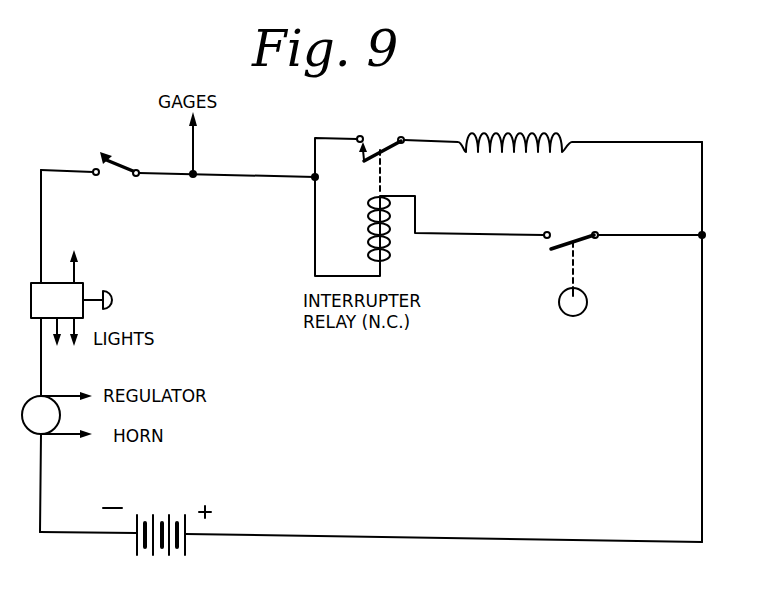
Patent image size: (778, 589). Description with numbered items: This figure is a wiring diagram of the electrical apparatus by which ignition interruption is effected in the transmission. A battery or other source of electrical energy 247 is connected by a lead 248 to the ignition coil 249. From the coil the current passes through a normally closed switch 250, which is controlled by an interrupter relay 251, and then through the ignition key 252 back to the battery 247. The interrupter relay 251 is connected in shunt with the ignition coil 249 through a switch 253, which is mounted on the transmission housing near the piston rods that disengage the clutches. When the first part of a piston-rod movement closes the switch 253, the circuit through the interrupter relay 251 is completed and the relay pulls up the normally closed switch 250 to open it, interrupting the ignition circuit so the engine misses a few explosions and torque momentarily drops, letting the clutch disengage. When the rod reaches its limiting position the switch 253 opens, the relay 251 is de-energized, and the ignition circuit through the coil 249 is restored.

The battery 247 is at (185, 512).
The lead 248 is at (467, 539).
The ignition coil 249 is at (548, 152).
The normally closed switch 250 is at (386, 140).
The interrupter relay 251 is at (391, 245).
The ignition key 252 is at (124, 176).
The switch 253 is at (597, 240).